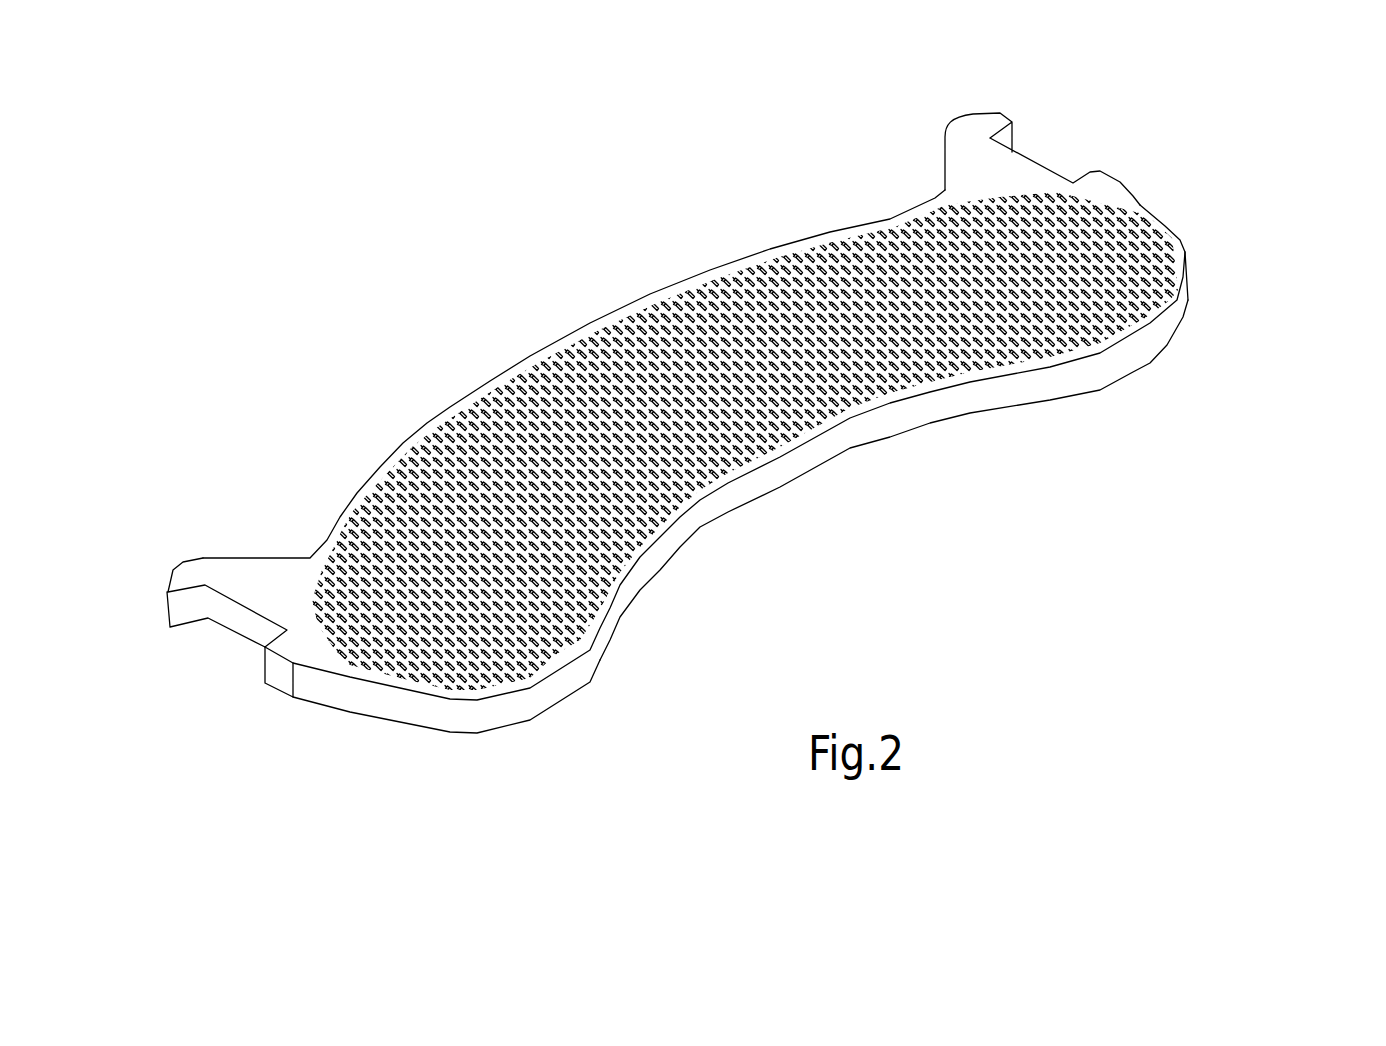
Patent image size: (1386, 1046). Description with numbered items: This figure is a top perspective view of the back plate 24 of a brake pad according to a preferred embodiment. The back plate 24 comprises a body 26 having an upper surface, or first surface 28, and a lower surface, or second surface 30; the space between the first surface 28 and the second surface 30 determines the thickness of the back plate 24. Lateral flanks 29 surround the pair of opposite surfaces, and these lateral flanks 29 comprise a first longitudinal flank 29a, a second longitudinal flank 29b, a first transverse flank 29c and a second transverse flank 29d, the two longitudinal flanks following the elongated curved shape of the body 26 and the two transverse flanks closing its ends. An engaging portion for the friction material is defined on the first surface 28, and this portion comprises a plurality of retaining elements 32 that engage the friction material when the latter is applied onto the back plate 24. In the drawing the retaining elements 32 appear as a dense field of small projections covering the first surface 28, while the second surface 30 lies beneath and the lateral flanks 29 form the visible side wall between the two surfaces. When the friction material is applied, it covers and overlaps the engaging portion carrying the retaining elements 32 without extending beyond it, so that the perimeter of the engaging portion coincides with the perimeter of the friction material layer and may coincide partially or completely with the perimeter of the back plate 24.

The back plate 24 is at (402, 365).
The body 26 is at (293, 583).
The first surface 28 is at (1115, 214).
The lateral flanks 29 is at (338, 697).
The first longitudinal flank 29a is at (798, 236).
The second longitudinal flank 29b is at (835, 446).
The first transverse flank 29c is at (273, 672).
The second transverse flank 29d is at (1192, 238).
The second surface 30 is at (1040, 402).
The retaining elements 32 is at (558, 333).